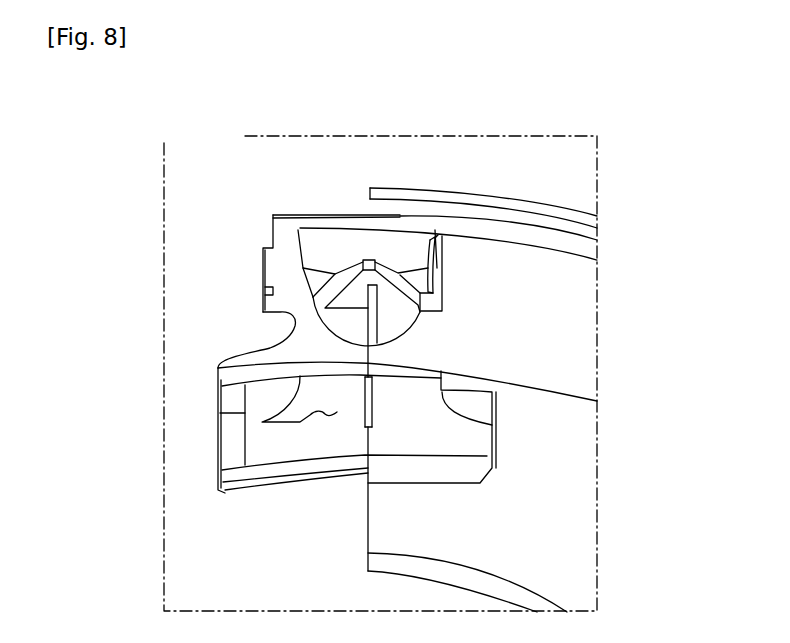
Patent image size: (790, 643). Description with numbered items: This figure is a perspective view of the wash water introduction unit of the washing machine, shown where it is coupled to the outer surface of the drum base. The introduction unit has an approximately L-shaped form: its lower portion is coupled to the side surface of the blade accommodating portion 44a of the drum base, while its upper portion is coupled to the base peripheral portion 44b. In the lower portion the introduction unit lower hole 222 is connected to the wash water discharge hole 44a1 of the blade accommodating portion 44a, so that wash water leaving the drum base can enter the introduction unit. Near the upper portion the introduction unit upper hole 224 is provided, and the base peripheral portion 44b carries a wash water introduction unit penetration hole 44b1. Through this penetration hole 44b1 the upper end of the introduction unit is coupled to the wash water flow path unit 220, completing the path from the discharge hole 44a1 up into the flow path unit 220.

The wash water flow path unit 220 is at (305, 347).
The introduction unit lower hole 222 is at (262, 422).
The introduction unit upper hole 224 is at (337, 247).
The blade accommodating portion 44a is at (560, 528).
The wash water discharge hole 44a1 is at (410, 472).
The base peripheral portion 44b is at (567, 302).
The wash water introduction unit penetration hole 44b1 is at (442, 236).